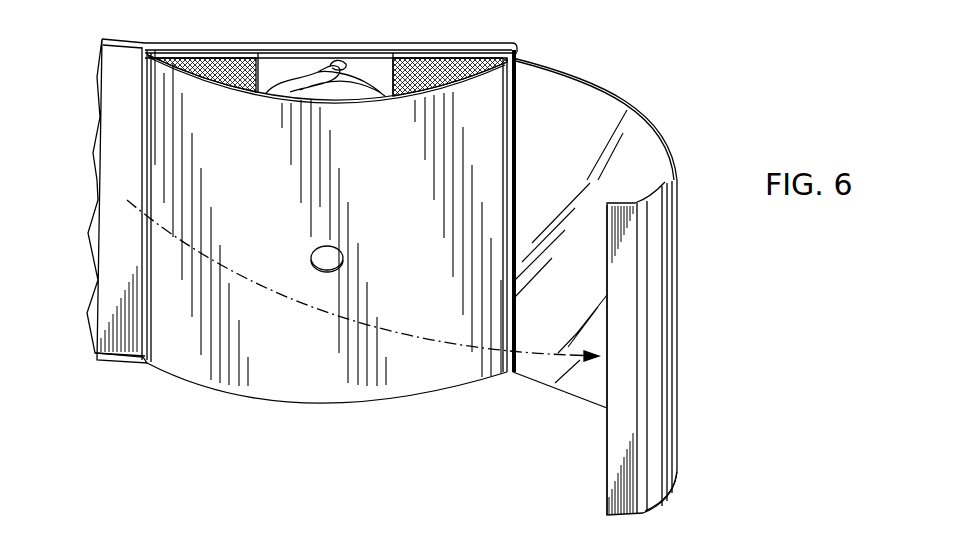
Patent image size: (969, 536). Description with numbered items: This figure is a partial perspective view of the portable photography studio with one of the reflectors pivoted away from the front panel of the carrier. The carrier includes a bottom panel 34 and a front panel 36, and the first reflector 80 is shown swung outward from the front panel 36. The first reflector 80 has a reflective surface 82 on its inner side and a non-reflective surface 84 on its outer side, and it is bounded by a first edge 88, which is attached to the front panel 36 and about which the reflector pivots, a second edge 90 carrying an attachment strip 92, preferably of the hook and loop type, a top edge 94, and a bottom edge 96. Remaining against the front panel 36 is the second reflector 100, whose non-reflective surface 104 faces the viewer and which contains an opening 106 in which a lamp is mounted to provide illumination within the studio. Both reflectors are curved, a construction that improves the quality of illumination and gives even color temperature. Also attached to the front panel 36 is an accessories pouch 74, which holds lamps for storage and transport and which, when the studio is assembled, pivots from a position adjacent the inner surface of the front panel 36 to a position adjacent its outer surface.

The bottom panel 34 is at (105, 65).
The front panel 36 is at (378, 43).
The accessories pouch 74 is at (325, 63).
The first reflector 80 is at (678, 315).
The reflective surface 82 is at (595, 105).
The non-reflective surface 84 is at (665, 393).
The first edge 88 is at (515, 115).
The second edge 90 is at (643, 495).
The attachment strip 92 is at (613, 460).
The top edge 94 is at (660, 122).
The bottom edge 96 is at (568, 397).
The second reflector 100 is at (408, 217).
The non-reflective surface 104 is at (308, 393).
The opening 106 is at (322, 265).